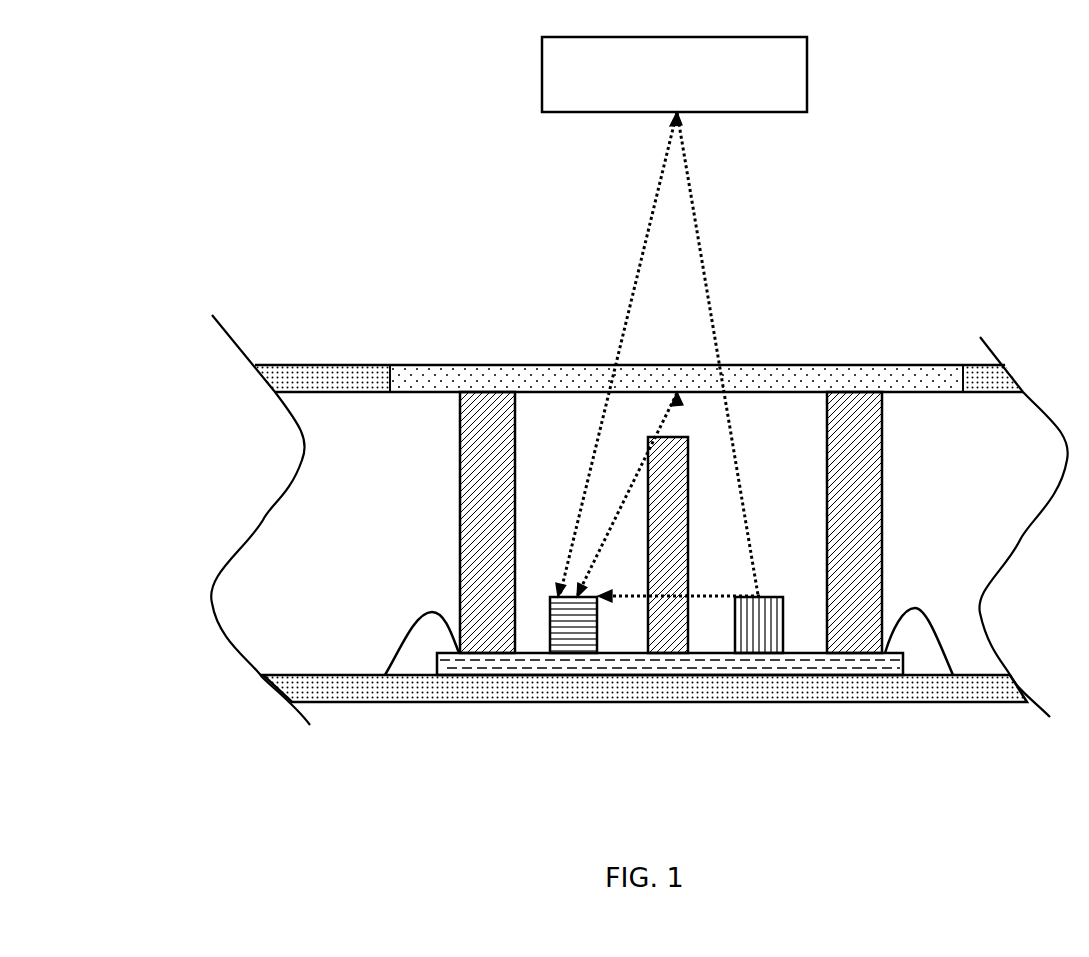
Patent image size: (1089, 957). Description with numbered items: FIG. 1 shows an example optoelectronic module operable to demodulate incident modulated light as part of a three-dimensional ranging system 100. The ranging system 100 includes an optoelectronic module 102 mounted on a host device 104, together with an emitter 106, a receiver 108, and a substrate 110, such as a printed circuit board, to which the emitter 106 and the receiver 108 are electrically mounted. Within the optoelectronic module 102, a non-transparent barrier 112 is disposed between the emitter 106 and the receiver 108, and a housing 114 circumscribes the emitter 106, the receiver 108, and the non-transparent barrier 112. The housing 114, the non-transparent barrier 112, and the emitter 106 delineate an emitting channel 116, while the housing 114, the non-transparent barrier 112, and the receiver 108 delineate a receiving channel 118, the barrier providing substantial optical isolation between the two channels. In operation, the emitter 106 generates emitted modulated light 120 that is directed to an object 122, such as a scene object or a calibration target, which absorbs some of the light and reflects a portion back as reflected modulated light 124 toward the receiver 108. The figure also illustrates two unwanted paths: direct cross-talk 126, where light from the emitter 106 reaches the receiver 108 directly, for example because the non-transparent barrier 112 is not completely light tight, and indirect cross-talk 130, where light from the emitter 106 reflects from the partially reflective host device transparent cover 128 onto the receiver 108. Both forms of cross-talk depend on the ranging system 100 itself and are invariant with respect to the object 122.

The 3D ranging system 100 is at (180, 156).
The optoelectronic module 102 is at (422, 443).
The host device 104 is at (315, 605).
The emitter 106 is at (763, 640).
The receiver 108 is at (558, 630).
The substrate 110 is at (503, 665).
The non-transparent barrier 112 is at (673, 610).
The housing 114 is at (475, 556).
The emitting channel 116 is at (801, 450).
The receiving channel 118 is at (576, 450).
The emitted modulated light 120 is at (693, 213).
The object 122 is at (697, 90).
The reflected modulated light 124 is at (637, 287).
The direct cross-talk 126 is at (617, 593).
The host device transparent cover 128 is at (852, 383).
The indirect cross-talk 130 is at (605, 507).